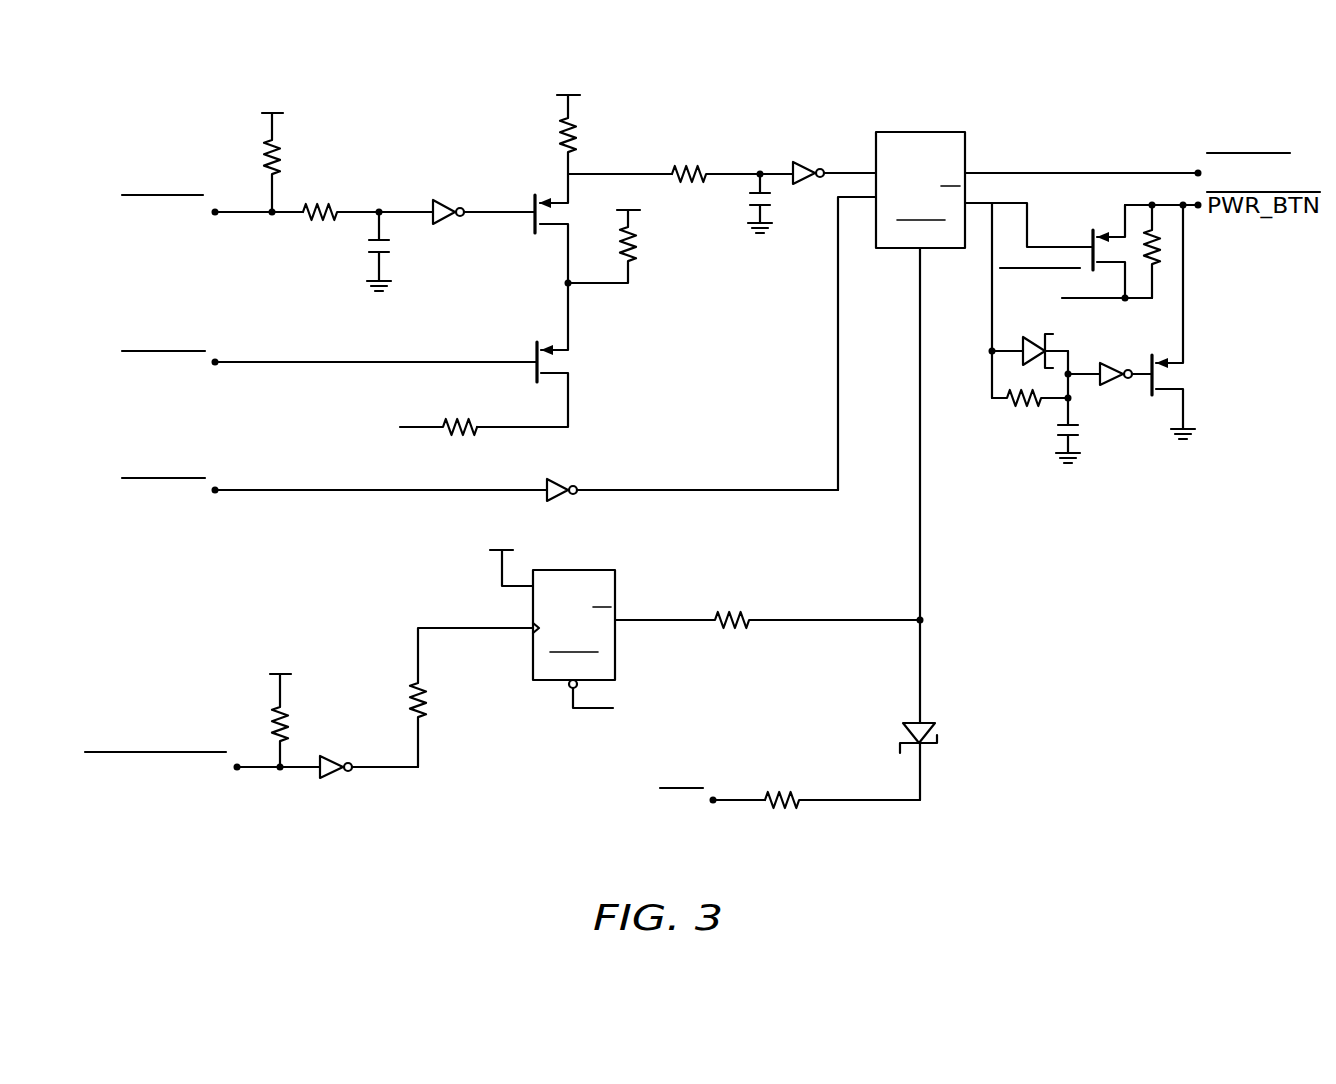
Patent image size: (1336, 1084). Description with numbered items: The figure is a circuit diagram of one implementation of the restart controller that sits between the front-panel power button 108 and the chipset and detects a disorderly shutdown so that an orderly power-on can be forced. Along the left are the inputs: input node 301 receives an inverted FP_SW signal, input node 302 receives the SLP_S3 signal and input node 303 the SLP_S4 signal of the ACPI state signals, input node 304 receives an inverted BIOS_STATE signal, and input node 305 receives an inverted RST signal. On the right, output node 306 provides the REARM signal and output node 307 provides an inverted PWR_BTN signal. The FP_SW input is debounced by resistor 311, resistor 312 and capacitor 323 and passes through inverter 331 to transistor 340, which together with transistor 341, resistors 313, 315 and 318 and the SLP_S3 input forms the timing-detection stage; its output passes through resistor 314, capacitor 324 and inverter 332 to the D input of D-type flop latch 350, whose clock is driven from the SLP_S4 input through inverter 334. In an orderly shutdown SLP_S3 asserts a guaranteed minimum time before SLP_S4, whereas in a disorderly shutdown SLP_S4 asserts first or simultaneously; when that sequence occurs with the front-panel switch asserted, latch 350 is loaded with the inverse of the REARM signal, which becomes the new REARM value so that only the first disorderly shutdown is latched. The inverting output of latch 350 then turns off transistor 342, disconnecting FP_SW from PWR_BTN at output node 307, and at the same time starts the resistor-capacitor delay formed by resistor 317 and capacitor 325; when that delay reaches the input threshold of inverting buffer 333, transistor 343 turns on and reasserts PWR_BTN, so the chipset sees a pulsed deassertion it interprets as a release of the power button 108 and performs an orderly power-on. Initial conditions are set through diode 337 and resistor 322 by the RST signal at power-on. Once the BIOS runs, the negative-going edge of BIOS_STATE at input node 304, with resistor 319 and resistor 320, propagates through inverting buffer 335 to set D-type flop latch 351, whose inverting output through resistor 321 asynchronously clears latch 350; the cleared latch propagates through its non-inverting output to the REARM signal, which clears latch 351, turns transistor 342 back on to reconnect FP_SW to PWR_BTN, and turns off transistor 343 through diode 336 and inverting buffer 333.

The power button 108 is at (1080, 607).
The input node 301 is at (215, 208).
The input node 302 is at (215, 357).
The input node 303 is at (215, 485).
The input node 304 is at (237, 760).
The input node 305 is at (713, 795).
The output node 306 is at (1196, 169).
The output node 307 is at (1167, 247).
The resistor 311 is at (285, 150).
The resistor 312 is at (337, 205).
The resistor 313 is at (582, 137).
The resistor 314 is at (700, 170).
The resistor 315 is at (640, 250).
The resistor 317 is at (1030, 412).
The resistor 318 is at (475, 424).
The resistor 319 is at (293, 714).
The resistor 320 is at (432, 698).
The resistor 321 is at (750, 611).
The resistor 322 is at (798, 790).
The capacitor 323 is at (388, 248).
The capacitor 324 is at (752, 198).
The capacitor 325 is at (1076, 430).
The inverter 331 is at (445, 204).
The inverter 332 is at (805, 165).
The inverting buffer 333 is at (1108, 366).
The inverter 334 is at (563, 487).
The inverting buffer 335 is at (336, 778).
The diode 336 is at (1049, 337).
The diode 337 is at (937, 724).
The transistor 340 is at (530, 231).
The transistor 341 is at (570, 361).
The transistor 342 is at (1103, 229).
The transistor 343 is at (1183, 379).
The D-type flop latch 350 is at (920, 132).
The D-type flop latch 351 is at (582, 570).